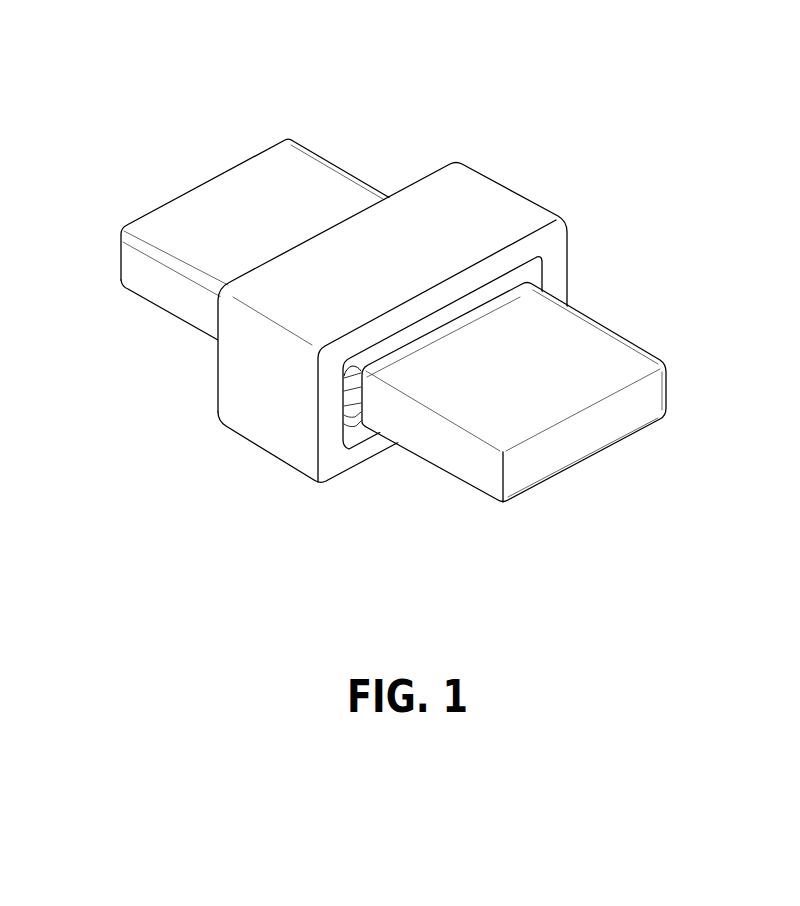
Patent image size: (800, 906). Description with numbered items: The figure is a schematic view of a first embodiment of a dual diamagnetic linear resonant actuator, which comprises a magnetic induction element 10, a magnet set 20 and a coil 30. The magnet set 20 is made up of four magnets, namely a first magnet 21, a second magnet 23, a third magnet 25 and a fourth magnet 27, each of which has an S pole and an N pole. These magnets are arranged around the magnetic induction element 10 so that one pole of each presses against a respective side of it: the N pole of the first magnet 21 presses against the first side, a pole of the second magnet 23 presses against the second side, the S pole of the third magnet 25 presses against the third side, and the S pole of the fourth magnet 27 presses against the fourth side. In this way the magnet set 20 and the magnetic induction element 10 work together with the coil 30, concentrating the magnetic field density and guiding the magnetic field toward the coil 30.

The magnet set 20 is at (441, 261).
The first magnet 21 is at (318, 192).
The second magnet 23 is at (595, 368).
The third magnet 25 is at (463, 305).
The fourth magnet 27 is at (355, 408).
The magnetic induction element 10 is at (350, 390).
The coil 30 is at (417, 322).